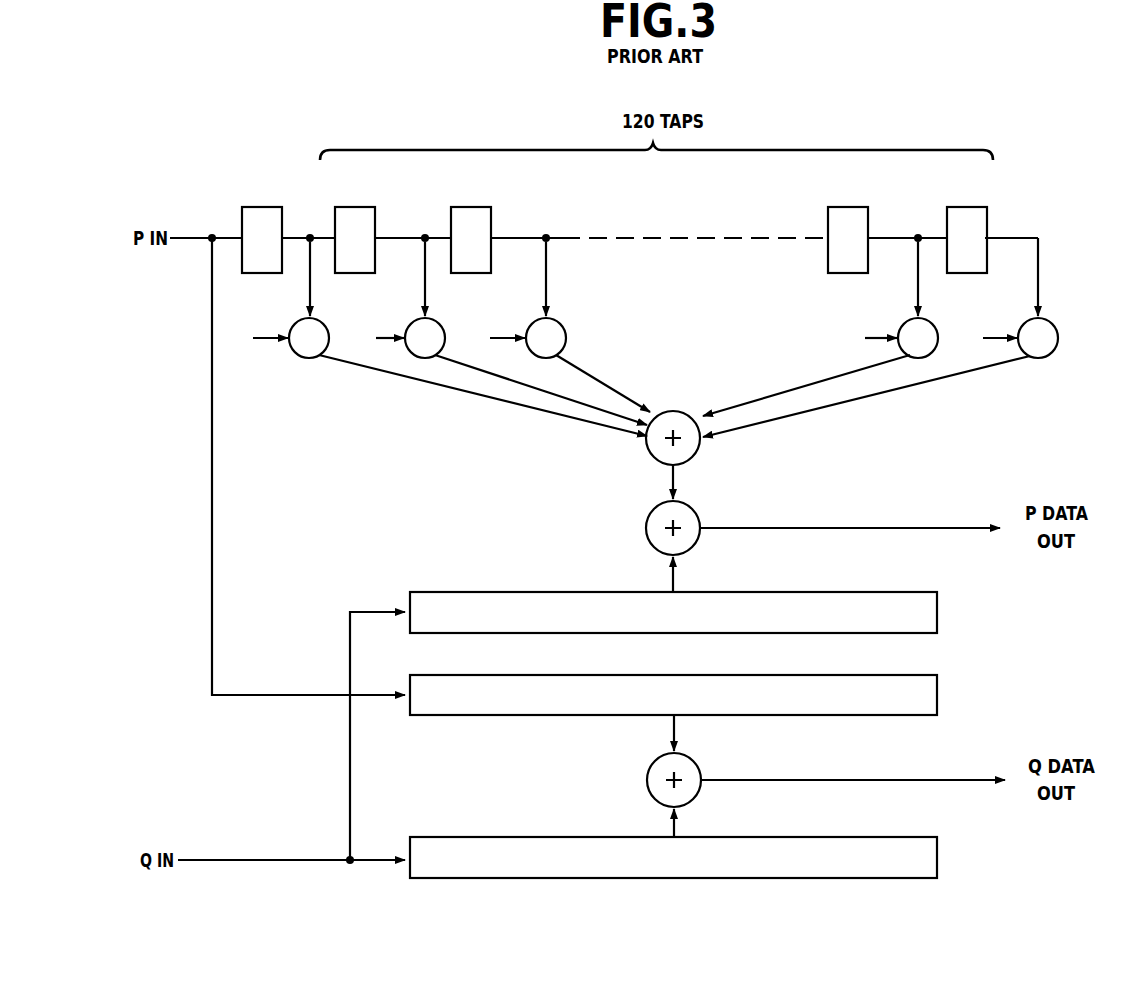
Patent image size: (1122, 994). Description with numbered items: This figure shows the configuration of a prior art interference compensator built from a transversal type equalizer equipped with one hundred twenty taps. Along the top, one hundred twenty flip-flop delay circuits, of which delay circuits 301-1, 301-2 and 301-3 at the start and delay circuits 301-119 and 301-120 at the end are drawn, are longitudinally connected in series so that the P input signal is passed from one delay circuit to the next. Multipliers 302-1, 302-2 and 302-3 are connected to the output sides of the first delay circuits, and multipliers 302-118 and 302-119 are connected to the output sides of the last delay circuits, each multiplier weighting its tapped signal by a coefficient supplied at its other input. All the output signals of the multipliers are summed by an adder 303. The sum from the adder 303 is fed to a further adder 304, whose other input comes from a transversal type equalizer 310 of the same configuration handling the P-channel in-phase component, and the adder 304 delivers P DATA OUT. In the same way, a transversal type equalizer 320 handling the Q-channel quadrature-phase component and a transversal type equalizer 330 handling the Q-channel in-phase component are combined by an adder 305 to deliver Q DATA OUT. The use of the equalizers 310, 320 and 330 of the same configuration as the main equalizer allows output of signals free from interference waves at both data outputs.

The delay circuit 301-1 is at (272, 205).
The delay circuit 301-2 is at (365, 205).
The delay circuit 301-3 is at (478, 205).
The delay circuit 301-119 is at (862, 205).
The delay circuit 301-120 is at (977, 206).
The multiplier 302-1 is at (294, 327).
The multiplier 302-2 is at (412, 327).
The multiplier 302-3 is at (532, 327).
The multiplier 302-118 is at (912, 322).
The multiplier 302-119 is at (1027, 327).
The adder 303 is at (675, 409).
The adder 304 is at (694, 507).
The adder 305 is at (698, 766).
The transversal type equalizer 310 is at (919, 592).
The transversal type equalizer 320 is at (919, 675).
The transversal type equalizer 330 is at (925, 838).